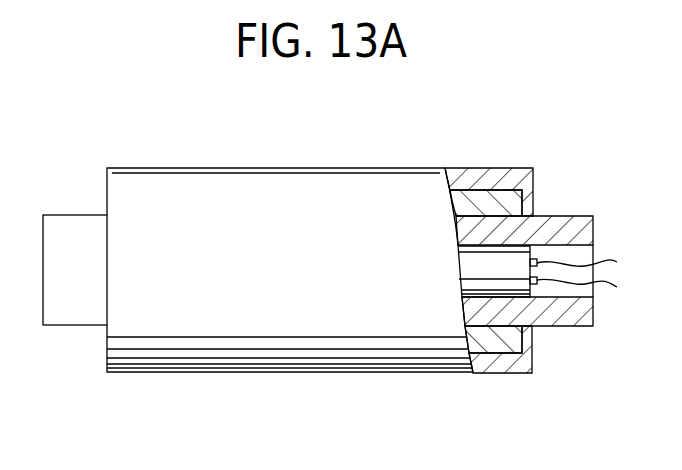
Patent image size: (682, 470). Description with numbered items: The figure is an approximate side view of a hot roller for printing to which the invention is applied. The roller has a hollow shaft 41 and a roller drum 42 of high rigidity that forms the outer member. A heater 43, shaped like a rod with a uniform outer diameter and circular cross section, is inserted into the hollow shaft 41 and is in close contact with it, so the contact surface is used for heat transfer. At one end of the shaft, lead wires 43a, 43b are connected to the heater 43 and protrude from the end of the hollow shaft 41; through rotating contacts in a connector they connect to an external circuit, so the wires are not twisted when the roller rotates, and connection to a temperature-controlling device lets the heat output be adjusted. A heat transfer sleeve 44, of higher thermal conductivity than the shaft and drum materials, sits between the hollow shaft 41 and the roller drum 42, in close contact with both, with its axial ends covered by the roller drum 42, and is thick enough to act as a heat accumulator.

The hollow shaft 41 is at (562, 317).
The roller drum 42 is at (388, 195).
The heater 43 is at (500, 272).
The lead wire 43a is at (608, 262).
The lead wire 43b is at (608, 291).
The heat transfer sleeve 44 is at (485, 205).